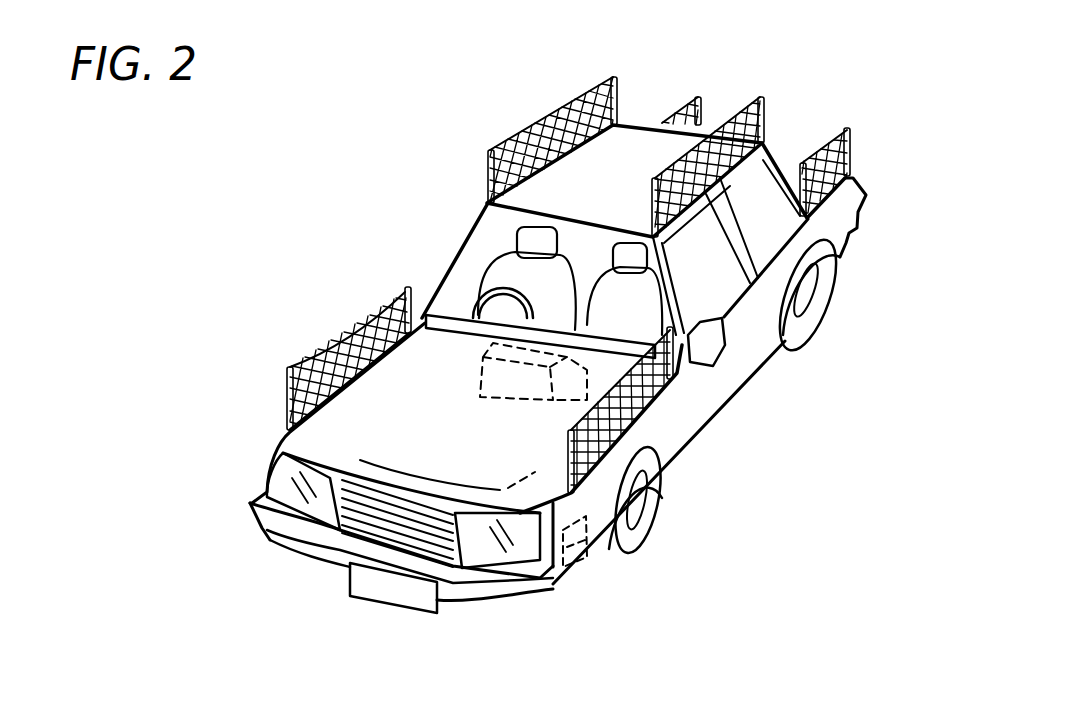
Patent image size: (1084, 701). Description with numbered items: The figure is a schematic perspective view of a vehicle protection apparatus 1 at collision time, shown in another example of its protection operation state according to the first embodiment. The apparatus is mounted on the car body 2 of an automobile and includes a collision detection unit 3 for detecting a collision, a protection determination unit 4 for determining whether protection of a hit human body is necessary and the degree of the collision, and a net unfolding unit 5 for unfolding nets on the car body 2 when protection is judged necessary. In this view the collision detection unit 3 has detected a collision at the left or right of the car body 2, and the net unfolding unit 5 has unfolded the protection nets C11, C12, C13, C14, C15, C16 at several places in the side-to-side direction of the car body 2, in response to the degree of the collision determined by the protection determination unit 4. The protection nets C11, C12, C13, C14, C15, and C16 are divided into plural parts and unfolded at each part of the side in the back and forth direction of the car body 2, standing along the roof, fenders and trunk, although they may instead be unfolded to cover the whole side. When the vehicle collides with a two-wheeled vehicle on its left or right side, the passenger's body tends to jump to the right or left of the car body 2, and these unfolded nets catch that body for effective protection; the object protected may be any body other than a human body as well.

The vehicle protection apparatus 1 is at (340, 82).
The car body 2 is at (723, 399).
The collision detection unit 3 is at (596, 572).
The protection determination unit 4 is at (480, 392).
The net unfolding unit 5 is at (618, 102).
The protection net C11 is at (738, 94).
The protection net C12 is at (514, 140).
The protection net C13 is at (653, 410).
The protection net C14 is at (338, 333).
The protection net C15 is at (853, 150).
The protection net C16 is at (674, 112).